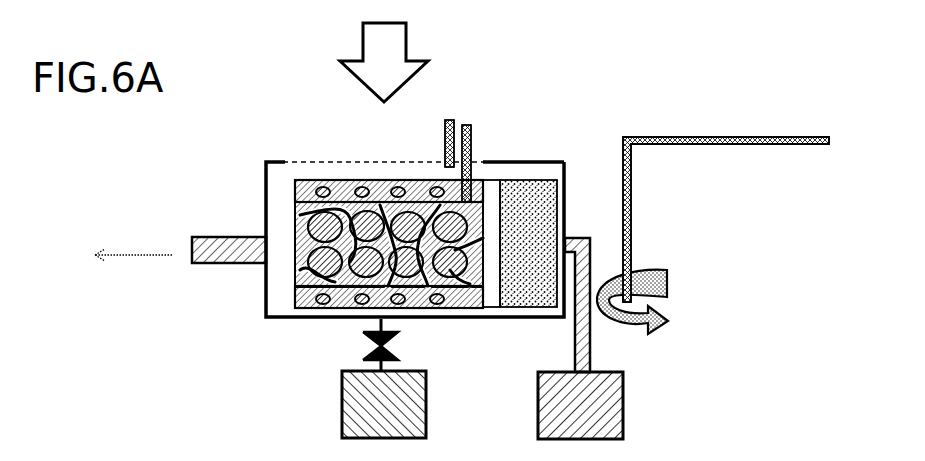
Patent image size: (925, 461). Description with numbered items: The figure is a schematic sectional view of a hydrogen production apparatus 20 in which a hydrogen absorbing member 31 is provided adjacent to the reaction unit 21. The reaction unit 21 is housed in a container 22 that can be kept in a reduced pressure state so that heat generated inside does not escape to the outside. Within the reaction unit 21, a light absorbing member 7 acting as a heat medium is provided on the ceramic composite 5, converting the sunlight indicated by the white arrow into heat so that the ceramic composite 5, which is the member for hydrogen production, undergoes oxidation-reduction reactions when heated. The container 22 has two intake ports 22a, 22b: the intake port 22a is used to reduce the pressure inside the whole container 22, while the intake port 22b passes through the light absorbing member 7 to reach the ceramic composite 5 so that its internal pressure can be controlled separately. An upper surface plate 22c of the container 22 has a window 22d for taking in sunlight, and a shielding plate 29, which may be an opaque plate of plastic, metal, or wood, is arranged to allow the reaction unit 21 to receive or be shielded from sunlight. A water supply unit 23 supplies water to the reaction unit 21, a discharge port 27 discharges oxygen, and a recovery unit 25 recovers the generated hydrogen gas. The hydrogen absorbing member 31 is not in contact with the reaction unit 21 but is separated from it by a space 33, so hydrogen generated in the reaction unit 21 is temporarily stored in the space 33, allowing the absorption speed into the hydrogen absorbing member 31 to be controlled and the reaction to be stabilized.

The ceramic composite 5 is at (296, 222).
The light absorbing member 7 is at (303, 179).
The hydrogen production apparatus 20 is at (609, 103).
The reaction unit 21 is at (300, 121).
The container 22 is at (528, 160).
The intake port 22a is at (447, 118).
The intake port 22b is at (470, 125).
The upper surface plate 22c is at (490, 161).
The window 22d is at (316, 160).
The water supply unit 23 is at (345, 381).
The recovery unit 25 is at (615, 396).
The discharge port 27 is at (226, 250).
The shielding plate 29 is at (708, 137).
The hydrogen absorbing member 31 is at (526, 292).
The space 33 is at (490, 293).